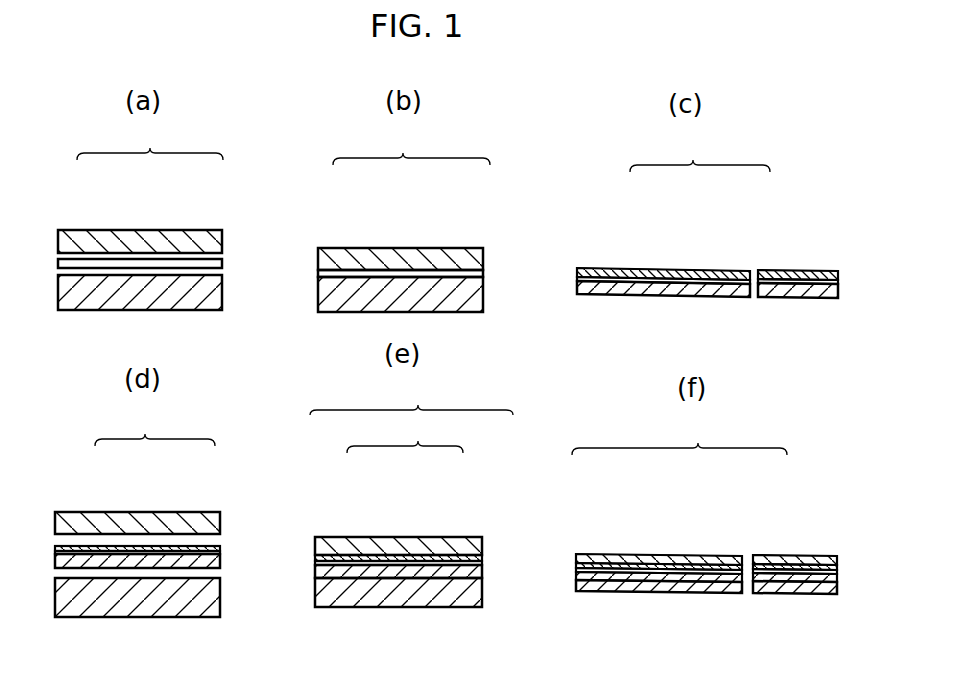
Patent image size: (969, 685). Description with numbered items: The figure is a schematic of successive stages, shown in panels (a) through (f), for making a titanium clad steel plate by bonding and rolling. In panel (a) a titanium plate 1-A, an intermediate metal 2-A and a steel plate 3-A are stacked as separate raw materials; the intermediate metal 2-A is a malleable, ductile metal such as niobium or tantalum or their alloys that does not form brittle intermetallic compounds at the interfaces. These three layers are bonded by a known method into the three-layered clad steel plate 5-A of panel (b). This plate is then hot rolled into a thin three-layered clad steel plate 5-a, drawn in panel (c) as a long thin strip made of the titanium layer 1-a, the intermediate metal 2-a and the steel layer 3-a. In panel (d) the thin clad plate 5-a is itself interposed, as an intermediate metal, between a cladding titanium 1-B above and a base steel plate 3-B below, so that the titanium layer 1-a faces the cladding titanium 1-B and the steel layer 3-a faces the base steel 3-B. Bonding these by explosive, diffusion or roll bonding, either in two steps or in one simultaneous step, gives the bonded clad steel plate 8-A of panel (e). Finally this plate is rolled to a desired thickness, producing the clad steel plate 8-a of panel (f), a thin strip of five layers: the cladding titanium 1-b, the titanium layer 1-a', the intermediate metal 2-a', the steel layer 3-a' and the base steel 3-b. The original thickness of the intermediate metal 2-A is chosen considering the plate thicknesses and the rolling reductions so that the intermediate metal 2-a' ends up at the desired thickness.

The titanium plate 1-A is at (99, 240).
The intermediate metal 2-A is at (137, 263).
The steel plate 3-A is at (168, 283).
The three-layered clad steel plate 5-A is at (400, 218).
The titanium plate 1-a is at (446, 369).
The intermediate metal 2-a is at (446, 371).
The steel plate 3-a is at (446, 399).
The thin three-layered clad steel plate 5-a is at (402, 354).
The cladding titanium 1-B is at (73, 522).
The base steel plate 3-B is at (182, 590).
The bonded clad steel plate 8-A is at (411, 487).
The cladding titanium 1-b is at (600, 557).
The titanium plate 1-a' is at (706, 512).
The intermediate metal 2-a' is at (706, 530).
The steel plate 3-a' is at (706, 518).
The base steel plate 3-b is at (722, 587).
The clad steel plate 8-a is at (659, 506).